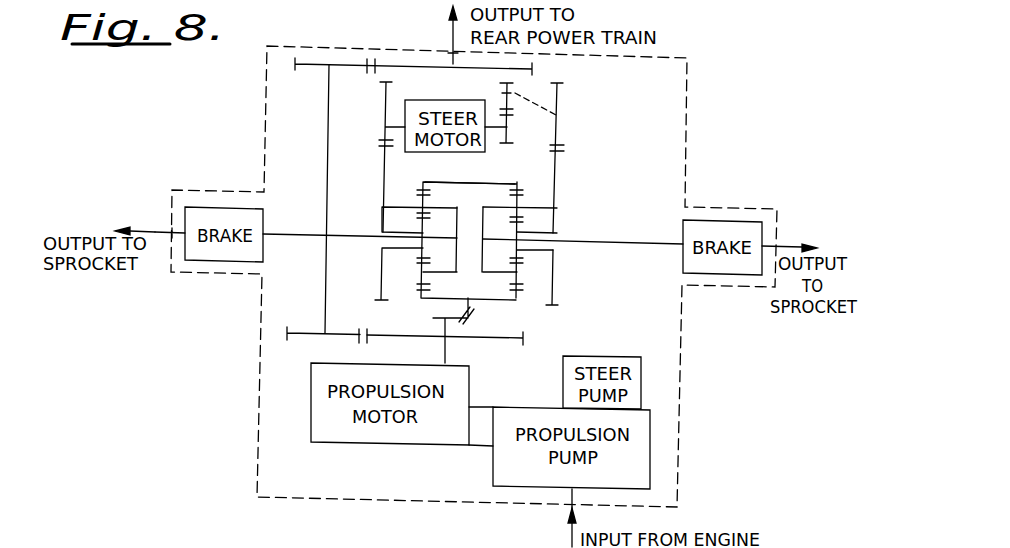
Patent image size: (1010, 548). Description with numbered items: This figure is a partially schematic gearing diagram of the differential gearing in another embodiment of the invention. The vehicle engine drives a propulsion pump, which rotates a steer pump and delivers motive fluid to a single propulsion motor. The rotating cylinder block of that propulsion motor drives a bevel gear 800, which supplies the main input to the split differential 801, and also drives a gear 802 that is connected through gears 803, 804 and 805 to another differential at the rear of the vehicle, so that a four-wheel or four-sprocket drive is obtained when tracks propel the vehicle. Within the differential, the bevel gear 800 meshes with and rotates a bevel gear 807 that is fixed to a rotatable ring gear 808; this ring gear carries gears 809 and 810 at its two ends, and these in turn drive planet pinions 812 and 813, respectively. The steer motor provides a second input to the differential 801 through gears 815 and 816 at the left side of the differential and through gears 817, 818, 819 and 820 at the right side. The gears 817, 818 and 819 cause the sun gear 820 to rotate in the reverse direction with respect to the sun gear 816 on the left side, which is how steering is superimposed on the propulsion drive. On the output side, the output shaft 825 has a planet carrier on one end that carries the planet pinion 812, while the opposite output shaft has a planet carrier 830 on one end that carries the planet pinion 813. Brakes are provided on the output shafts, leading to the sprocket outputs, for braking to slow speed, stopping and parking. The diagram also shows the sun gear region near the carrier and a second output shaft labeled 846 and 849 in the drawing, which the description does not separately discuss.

The bevel gear 800 is at (433, 317).
The split differential 801 is at (496, 304).
The gear 802 is at (492, 342).
The gear 803 is at (295, 333).
The gear 804 is at (355, 63).
The gear 805 is at (413, 64).
The bevel gear 807 is at (466, 180).
The rotatable ring gear 808 is at (557, 158).
The gear 809 is at (418, 190).
The gear 810 is at (524, 193).
The planet pinion 812 is at (382, 212).
The planet pinion 813 is at (524, 220).
The gear 815 is at (385, 118).
The sun gear 816 is at (382, 276).
The gear 817 is at (509, 122).
The gear 818 is at (512, 93).
The gear 819 is at (560, 120).
The sun gear 820 is at (557, 177).
The output shaft 825 is at (316, 233).
The planet carrier 830 is at (500, 207).
The sun gear 846 is at (452, 203).
The right output shaft 849 is at (635, 243).